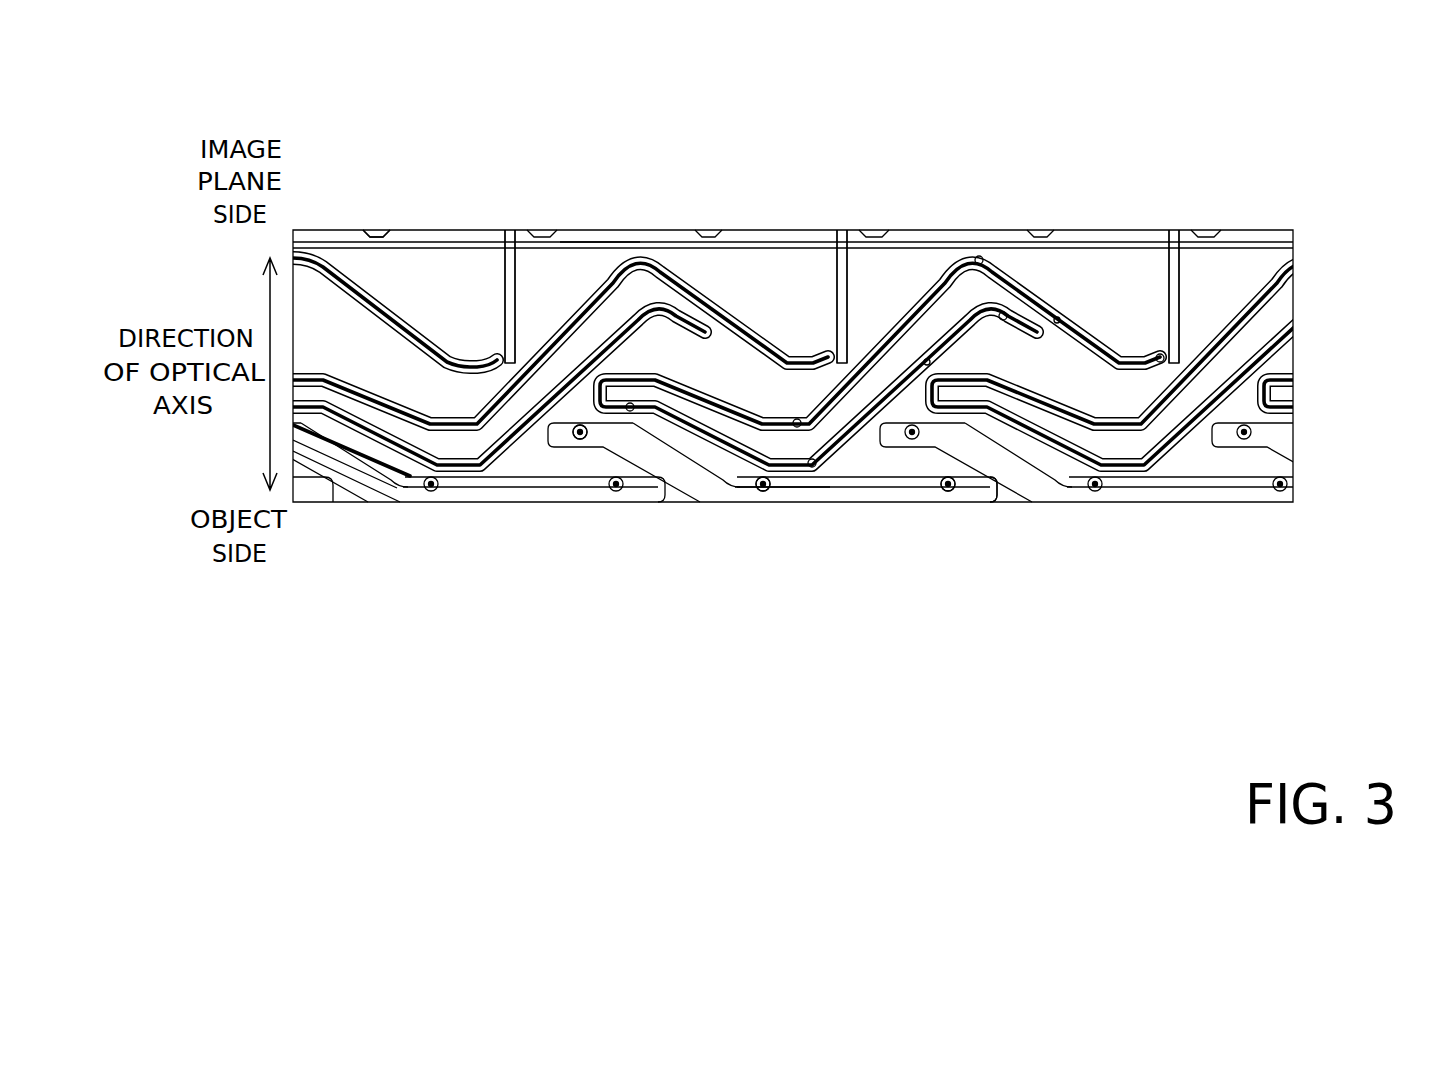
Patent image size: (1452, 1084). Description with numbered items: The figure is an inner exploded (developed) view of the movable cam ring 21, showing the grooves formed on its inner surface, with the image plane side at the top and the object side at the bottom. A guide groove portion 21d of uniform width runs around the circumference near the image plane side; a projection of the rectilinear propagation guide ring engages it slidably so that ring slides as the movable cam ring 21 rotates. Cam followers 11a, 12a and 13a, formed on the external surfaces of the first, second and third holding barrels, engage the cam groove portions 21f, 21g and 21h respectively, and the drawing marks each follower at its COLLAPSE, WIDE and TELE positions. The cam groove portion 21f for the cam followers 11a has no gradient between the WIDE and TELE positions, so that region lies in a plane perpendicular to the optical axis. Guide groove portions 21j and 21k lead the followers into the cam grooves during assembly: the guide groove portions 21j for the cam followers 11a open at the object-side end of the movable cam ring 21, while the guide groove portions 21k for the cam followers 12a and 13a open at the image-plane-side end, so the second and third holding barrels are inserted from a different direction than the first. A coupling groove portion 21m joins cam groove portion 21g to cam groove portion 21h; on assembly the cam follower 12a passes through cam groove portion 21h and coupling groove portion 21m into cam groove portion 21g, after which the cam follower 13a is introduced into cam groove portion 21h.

The cam follower 11a is at (957, 673).
The cam follower 12a is at (1103, 600).
The cam follower 13a is at (1188, 523).
The movable cam ring 21 is at (340, 320).
The guide groove portion 21d is at (445, 237).
The cam groove portion 21f is at (790, 485).
The cam groove portion 21g is at (927, 360).
The cam groove portion 21h is at (1055, 318).
The guide groove portion 21j is at (982, 498).
The guide groove portion 21k is at (845, 280).
The coupling groove portion 21m is at (595, 240).